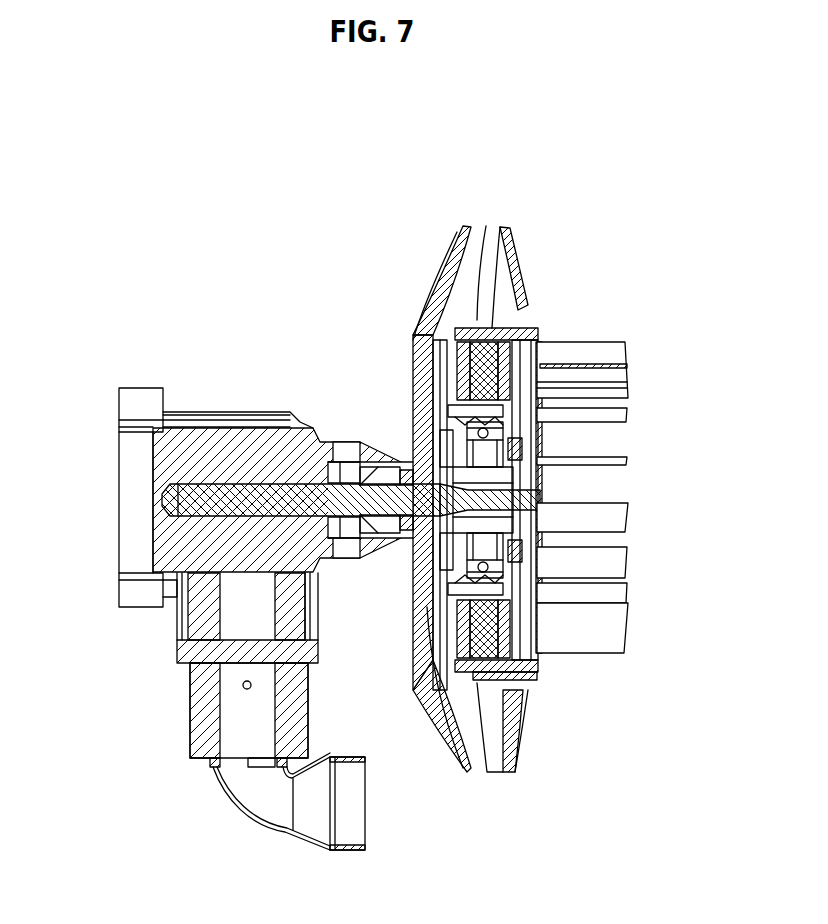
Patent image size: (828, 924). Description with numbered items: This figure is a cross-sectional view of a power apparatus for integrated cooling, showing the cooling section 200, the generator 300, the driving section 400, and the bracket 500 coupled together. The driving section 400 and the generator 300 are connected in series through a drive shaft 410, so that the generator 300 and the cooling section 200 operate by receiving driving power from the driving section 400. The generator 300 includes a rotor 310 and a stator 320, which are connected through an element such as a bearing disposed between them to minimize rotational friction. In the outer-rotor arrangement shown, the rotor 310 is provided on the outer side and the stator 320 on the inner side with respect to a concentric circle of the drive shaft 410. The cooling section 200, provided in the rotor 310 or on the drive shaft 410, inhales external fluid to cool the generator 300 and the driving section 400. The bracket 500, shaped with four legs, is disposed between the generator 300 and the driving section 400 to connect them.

The cooling section 200 is at (575, 633).
The generator 300 is at (556, 399).
The rotor 310 is at (482, 373).
The stator 320 is at (488, 455).
The driving section 400 is at (203, 707).
The drive shaft 410 is at (270, 498).
The bracket 500 is at (440, 730).